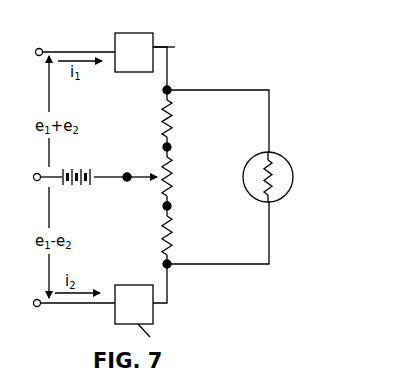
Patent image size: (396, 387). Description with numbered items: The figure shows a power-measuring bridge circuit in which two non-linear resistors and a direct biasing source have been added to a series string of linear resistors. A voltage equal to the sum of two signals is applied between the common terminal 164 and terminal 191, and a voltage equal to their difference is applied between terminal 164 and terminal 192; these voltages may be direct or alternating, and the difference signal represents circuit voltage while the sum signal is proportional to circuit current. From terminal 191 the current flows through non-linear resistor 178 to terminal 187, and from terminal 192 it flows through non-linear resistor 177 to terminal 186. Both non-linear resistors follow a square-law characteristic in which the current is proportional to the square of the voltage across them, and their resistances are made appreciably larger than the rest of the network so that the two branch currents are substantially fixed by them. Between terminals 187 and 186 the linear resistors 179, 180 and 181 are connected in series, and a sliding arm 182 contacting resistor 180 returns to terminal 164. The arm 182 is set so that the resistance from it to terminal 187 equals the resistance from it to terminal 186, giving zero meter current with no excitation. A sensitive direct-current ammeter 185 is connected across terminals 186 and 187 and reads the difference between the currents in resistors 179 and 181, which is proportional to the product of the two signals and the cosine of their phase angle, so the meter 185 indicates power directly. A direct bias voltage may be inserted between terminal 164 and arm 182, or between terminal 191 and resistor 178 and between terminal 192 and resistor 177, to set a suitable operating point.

The terminal 164 is at (34, 180).
The non-linear resistor 177 is at (153, 318).
The non-linear resistor 178 is at (153, 36).
The linear resistor 179 is at (172, 108).
The linear resistor 180 is at (172, 172).
The linear resistor 181 is at (172, 232).
The sliding arm 182 is at (133, 181).
The D.-C. ammeter 185 is at (287, 162).
The terminal 186 is at (170, 267).
The terminal 187 is at (169, 88).
The terminal 191 is at (42, 50).
The terminal 192 is at (40, 306).